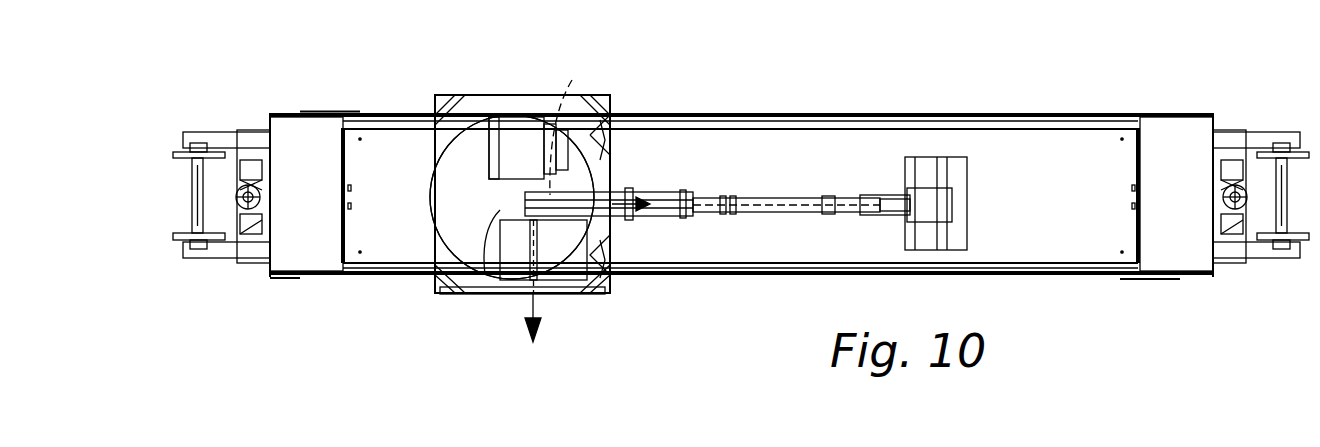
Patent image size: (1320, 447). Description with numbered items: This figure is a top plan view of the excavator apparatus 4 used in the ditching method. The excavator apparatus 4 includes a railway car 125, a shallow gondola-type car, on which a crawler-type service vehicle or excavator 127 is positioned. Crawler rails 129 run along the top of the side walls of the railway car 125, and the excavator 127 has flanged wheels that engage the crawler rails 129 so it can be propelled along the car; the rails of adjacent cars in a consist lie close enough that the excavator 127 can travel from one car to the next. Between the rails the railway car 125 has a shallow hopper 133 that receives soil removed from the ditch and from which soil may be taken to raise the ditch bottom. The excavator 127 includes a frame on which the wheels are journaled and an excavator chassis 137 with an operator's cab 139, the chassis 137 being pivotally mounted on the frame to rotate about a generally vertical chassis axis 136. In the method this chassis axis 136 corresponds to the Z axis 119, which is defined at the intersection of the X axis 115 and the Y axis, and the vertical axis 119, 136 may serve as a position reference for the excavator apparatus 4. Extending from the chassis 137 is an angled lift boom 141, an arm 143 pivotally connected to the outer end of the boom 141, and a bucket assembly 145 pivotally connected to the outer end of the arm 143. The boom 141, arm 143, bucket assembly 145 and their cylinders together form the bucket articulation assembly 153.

The excavator apparatus 4 is at (330, 40).
The X axis 115 is at (580, 125).
The Z axis 119 is at (490, 270).
The railway car 125 is at (1095, 113).
The excavator 127 is at (628, 86).
The crawler rails 129 is at (897, 128).
The shallow hopper 133 is at (1090, 240).
The chassis axis 136 is at (490, 270).
The excavator chassis 137 is at (450, 105).
The operator's cab 139 is at (512, 112).
The lift boom 141 is at (673, 206).
The arm 143 is at (738, 218).
The bucket assembly 145 is at (962, 225).
The bucket articulation assembly 153 is at (777, 195).